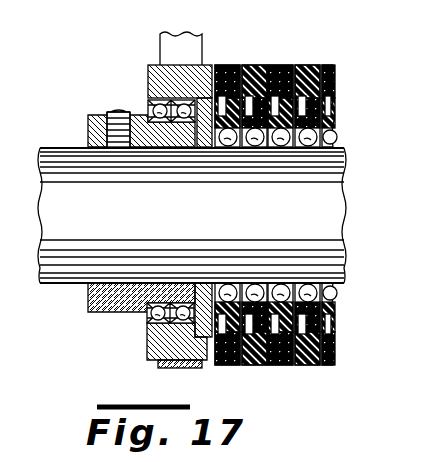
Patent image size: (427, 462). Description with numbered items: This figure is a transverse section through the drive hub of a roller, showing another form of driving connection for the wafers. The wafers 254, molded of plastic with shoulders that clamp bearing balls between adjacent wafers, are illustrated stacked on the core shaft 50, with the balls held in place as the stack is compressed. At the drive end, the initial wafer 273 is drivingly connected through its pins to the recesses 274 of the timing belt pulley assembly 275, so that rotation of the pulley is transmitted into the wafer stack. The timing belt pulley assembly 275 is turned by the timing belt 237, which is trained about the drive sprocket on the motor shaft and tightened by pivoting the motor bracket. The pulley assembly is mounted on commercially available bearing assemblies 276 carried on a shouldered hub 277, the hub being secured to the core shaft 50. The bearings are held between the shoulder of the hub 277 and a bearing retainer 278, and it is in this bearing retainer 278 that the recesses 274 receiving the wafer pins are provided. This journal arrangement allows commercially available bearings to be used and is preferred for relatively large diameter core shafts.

The core shaft 50 is at (335, 202).
The timing belt 237 is at (203, 40).
The wafers 254 is at (300, 67).
The initial wafer 273 is at (221, 368).
The recesses 274 is at (206, 368).
The timing belt pulley assembly 275 is at (150, 347).
The bearing assemblies 276 is at (150, 100).
The shouldered hub 277 is at (115, 305).
The bearing retainer 278 is at (207, 283).